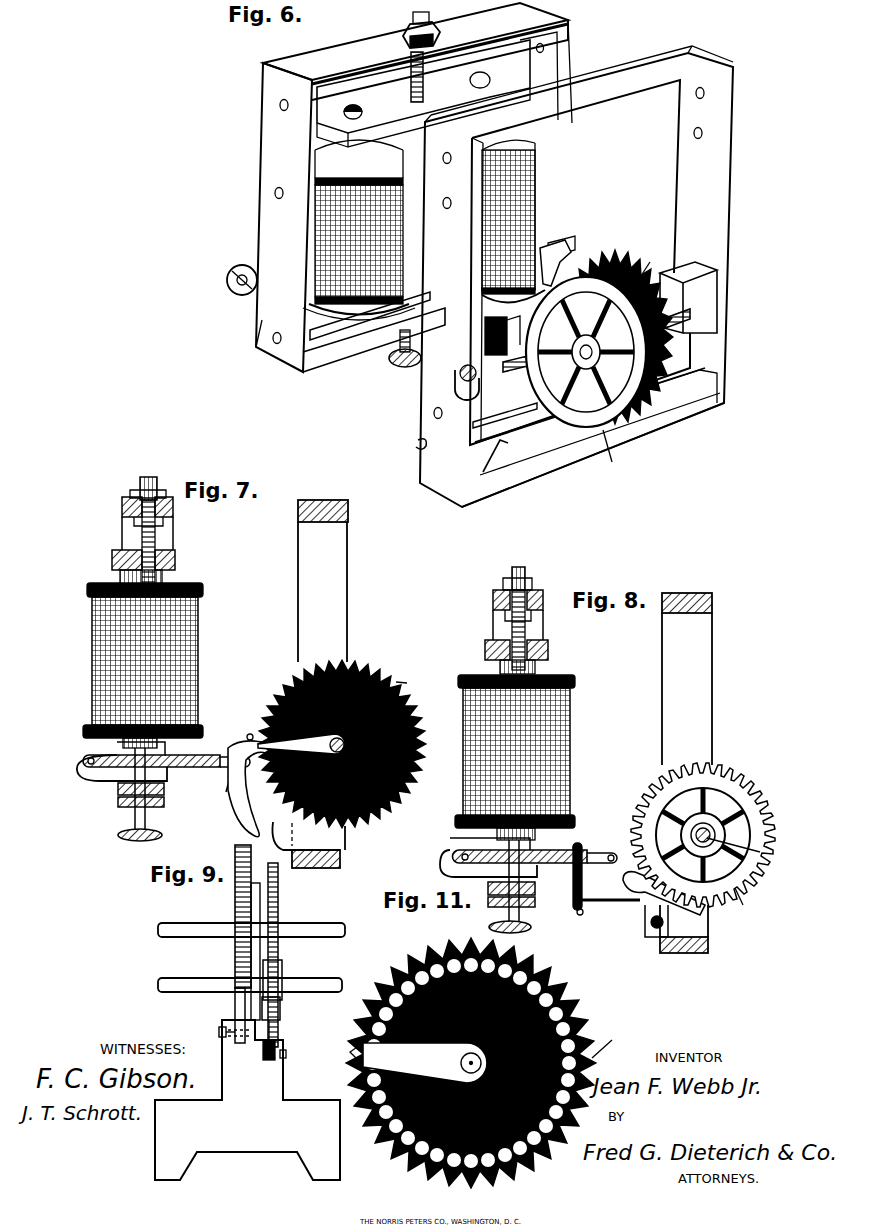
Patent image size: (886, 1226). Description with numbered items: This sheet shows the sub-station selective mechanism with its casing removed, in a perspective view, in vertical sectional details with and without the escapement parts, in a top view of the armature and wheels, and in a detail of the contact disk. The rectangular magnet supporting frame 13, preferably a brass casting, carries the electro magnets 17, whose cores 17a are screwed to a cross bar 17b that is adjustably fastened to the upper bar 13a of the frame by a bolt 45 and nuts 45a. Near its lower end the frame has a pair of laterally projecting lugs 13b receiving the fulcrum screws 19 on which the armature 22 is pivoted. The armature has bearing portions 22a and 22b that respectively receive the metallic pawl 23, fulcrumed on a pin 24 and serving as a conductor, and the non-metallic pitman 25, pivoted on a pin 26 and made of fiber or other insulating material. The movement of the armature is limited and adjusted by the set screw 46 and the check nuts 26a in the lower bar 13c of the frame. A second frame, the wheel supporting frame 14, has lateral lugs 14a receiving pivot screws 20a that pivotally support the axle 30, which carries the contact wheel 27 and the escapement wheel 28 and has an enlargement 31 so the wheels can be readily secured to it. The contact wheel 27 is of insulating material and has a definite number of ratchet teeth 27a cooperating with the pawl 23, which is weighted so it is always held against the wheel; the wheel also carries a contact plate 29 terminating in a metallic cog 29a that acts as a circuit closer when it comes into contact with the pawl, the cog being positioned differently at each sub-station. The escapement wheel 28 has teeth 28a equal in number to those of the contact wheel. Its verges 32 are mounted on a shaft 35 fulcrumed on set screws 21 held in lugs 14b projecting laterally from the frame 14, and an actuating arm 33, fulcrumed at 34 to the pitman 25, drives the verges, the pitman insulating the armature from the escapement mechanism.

In FIG. 6, the magnet supporting frame 13 is at (272, 156).
In FIG. 7, the magnet supporting frame 13 is at (122, 528).
In FIG. 8, the magnet supporting frame 13 is at (493, 621).
In FIG. 6, the upper bar of frame 13a is at (395, 40).
In FIG. 7, the upper bar of frame 13a is at (127, 500).
In FIG. 8, the upper bar of frame 13a is at (496, 590).
In FIG. 6, the laterally projecting lugs 13b is at (248, 306).
In FIG. 7, the laterally projecting lugs 13b is at (92, 778).
In FIG. 8, the laterally projecting lugs 13b is at (460, 868).
In FIG. 6, the lower bar of frame 13c is at (342, 355).
In FIG. 7, the lower bar of frame 13c is at (162, 808).
In FIG. 8, the lower bar of frame 13c is at (495, 896).
In FIG. 6, the wheel supporting frame 14 is at (706, 173).
In FIG. 7, the wheel supporting frame 14 is at (328, 570).
In FIG. 8, the wheel supporting frame 14 is at (713, 702).
In FIG. 6, the lateral lugs 14a is at (720, 302).
In FIG. 6, the lugs 14b is at (700, 385).
In FIG. 7, the lugs 14b is at (330, 838).
In FIG. 8, the lugs 14b is at (700, 930).
In FIG. 6, the electro magnets 17 is at (325, 225).
In FIG. 7, the electro magnets 17 is at (200, 623).
In FIG. 8, the electro magnets 17 is at (570, 733).
In FIG. 7, the cores 17a is at (117, 742).
In FIG. 8, the cores 17a is at (492, 838).
In FIG. 6, the cross bar 17b is at (362, 110).
In FIG. 7, the cross bar 17b is at (176, 562).
In FIG. 8, the cross bar 17b is at (486, 648).
In FIG. 6, the fulcrum screws 19 is at (228, 280).
In FIG. 6, the pivot screws 20a is at (460, 370).
In FIG. 6, the set screws 21 is at (416, 445).
In FIG. 6, the armature 22 is at (385, 330).
In FIG. 7, the armature 22 is at (205, 768).
In FIG. 8, the armature 22 is at (565, 850).
In FIG. 9, the armature 22 is at (247, 1100).
In FIG. 7, the bearing portion 22a is at (235, 760).
In FIG. 8, the bearing portion 22a is at (611, 855).
In FIG. 9, the bearing portion 22a is at (219, 1030).
In FIG. 9, the bearing portion 22b is at (278, 1026).
In FIG. 6, the metallic pawl 23 is at (562, 284).
In FIG. 7, the metallic pawl 23 is at (247, 742).
In FIG. 9, the metallic pawl 23 is at (235, 1000).
In FIG. 7, the pin 24 is at (232, 778).
In FIG. 9, the pin 24 is at (221, 1040).
In FIG. 6, the non-metallic pitman 25 is at (515, 300).
In FIG. 8, the non-metallic pitman 25 is at (582, 884).
In FIG. 9, the non-metallic pitman 25 is at (276, 1043).
In FIG. 8, the pin 26 is at (574, 856).
In FIG. 9, the pin 26 is at (286, 1054).
In FIG. 7, the check nuts 26a is at (125, 812).
In FIG. 8, the check nuts 26a is at (530, 903).
In FIG. 6, the contact wheel 27 is at (648, 418).
In FIG. 7, the contact wheel 27 is at (375, 672).
In FIG. 9, the contact wheel 27 is at (235, 957).
In FIG. 11, the contact wheel 27 is at (578, 1011).
In FIG. 6, the ratchet teeth 27a is at (644, 262).
In FIG. 7, the ratchet teeth 27a is at (414, 683).
In FIG. 11, the ratchet teeth 27a is at (615, 1043).
In FIG. 6, the escapement wheel 28 is at (588, 412).
In FIG. 8, the escapement wheel 28 is at (734, 782).
In FIG. 9, the escapement wheel 28 is at (279, 893).
In FIG. 6, the teeth 28a is at (612, 454).
In FIG. 8, the teeth 28a is at (751, 904).
In FIG. 7, the contact plate 29 is at (301, 744).
In FIG. 11, the contact plate 29 is at (425, 1063).
In FIG. 11, the metallic cog 29a is at (356, 1058).
In FIG. 6, the axle 30 is at (722, 292).
In FIG. 7, the axle 30 is at (329, 745).
In FIG. 8, the axle 30 is at (703, 823).
In FIG. 9, the axle 30 is at (315, 930).
In FIG. 6, the enlargement 31 is at (545, 416).
In FIG. 8, the enlargement 31 is at (760, 852).
In FIG. 8, the verges 32 is at (653, 912).
In FIG. 8, the actuating arm 33 is at (603, 903).
In FIG. 8, the fulcrum 34 is at (580, 916).
In FIG. 6, the shaft 35 is at (500, 472).
In FIG. 8, the shaft 35 is at (650, 937).
In FIG. 6, the bolt 45 is at (424, 86).
In FIG. 7, the bolt 45 is at (140, 540).
In FIG. 8, the bolt 45 is at (527, 627).
In FIG. 6, the nuts 45a is at (440, 34).
In FIG. 7, the nuts 45a is at (162, 488).
In FIG. 8, the nuts 45a is at (532, 581).
In FIG. 6, the set screw 46 is at (403, 370).
In FIG. 7, the set screw 46 is at (126, 840).
In FIG. 8, the set screw 46 is at (515, 933).